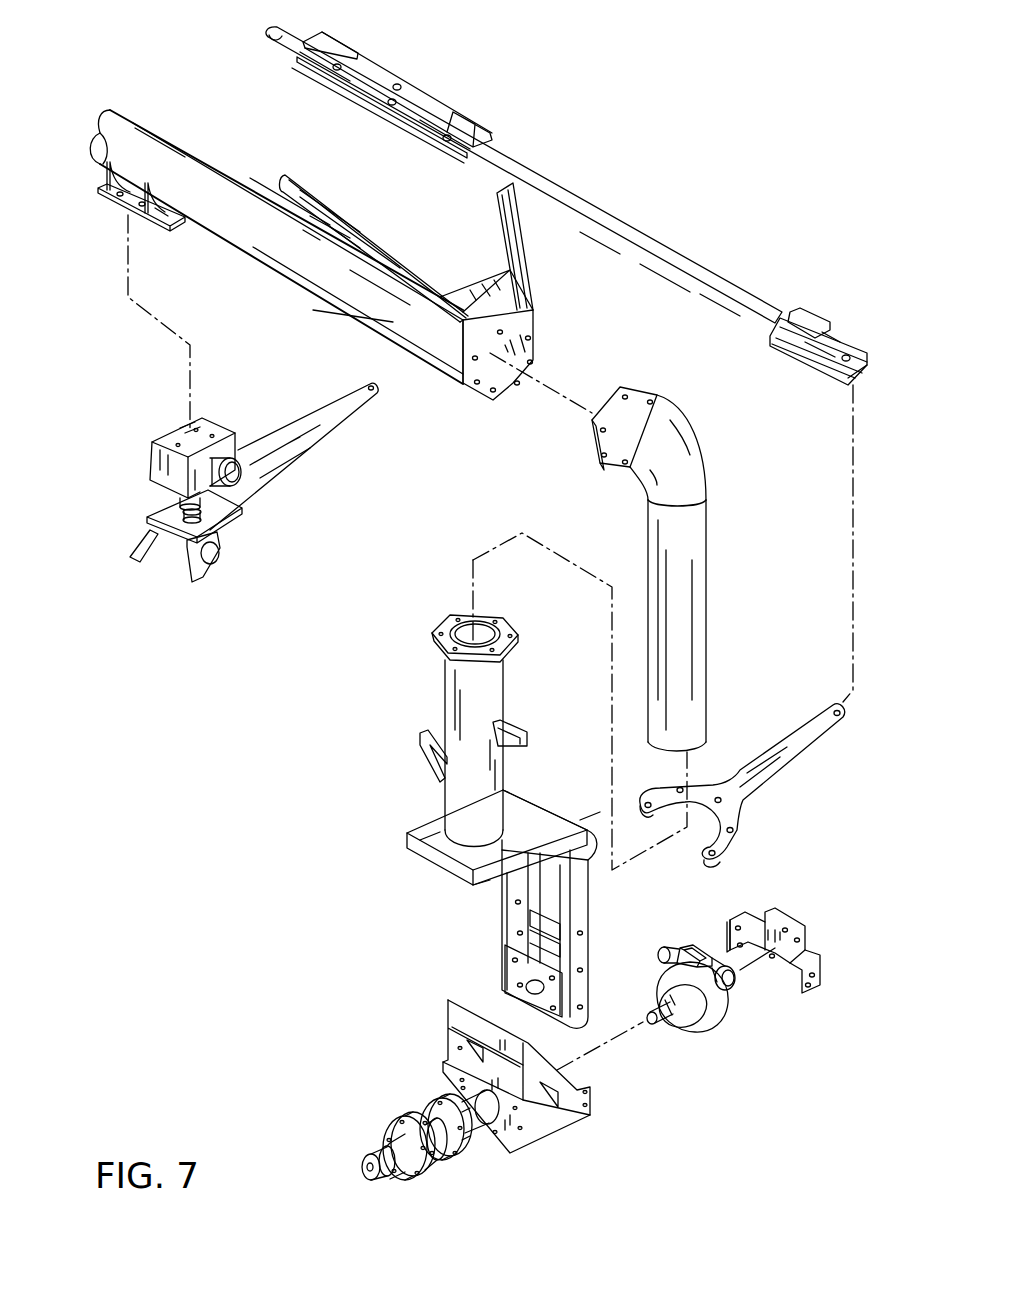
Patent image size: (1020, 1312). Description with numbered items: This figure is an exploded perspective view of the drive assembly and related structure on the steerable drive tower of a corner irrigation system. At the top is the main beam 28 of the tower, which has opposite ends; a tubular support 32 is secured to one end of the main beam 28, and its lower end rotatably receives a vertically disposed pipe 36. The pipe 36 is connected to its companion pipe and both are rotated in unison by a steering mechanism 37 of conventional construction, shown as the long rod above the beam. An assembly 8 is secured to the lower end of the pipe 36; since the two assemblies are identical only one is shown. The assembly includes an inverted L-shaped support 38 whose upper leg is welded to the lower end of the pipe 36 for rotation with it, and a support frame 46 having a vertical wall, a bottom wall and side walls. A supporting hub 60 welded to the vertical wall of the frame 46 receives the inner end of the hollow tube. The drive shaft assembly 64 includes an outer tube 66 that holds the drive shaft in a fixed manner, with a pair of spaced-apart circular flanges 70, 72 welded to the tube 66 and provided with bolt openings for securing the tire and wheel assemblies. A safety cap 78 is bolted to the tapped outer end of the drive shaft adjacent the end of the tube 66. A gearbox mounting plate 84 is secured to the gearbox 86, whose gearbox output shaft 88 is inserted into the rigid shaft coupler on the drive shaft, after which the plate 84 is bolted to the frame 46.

The assembly 8 is at (349, 1026).
The main beam 28 is at (330, 302).
The tubular support 32 is at (688, 552).
The pipe 36 is at (460, 690).
The steering mechanism 37 is at (686, 246).
The inverted L-shaped support 38 is at (432, 880).
The support frame 46 is at (623, 1096).
The supporting hub 60 is at (483, 1143).
The drive shaft assembly 64 is at (408, 1093).
The outer tube 66 is at (478, 1135).
The circular flange 70 is at (385, 1128).
The circular flange 72 is at (420, 1112).
The safety cap 78 is at (360, 1165).
The gearbox mounting plate 84 is at (782, 918).
The gearbox 86 is at (697, 997).
The gearbox output shaft 88 is at (648, 1014).